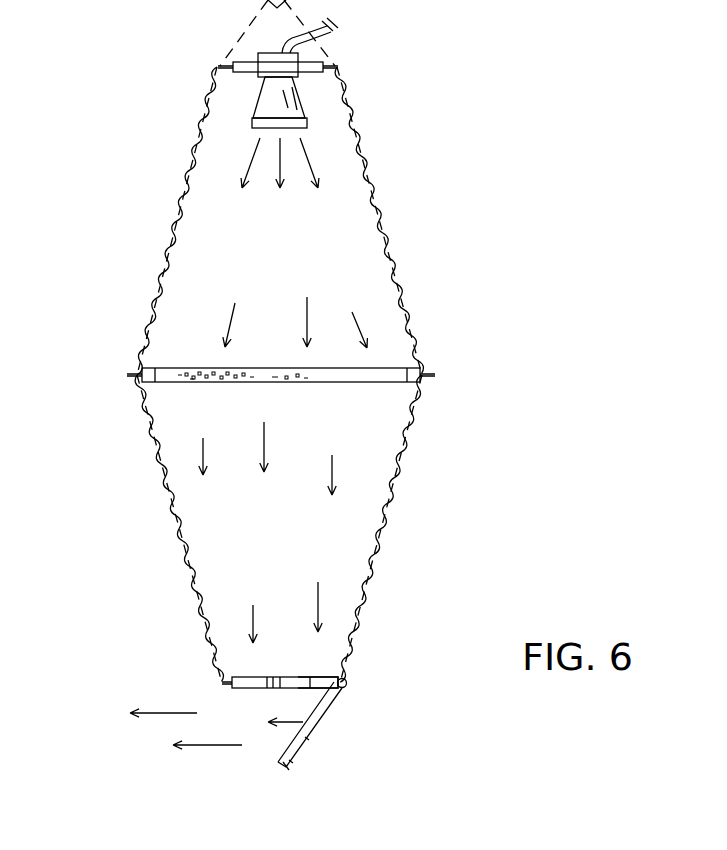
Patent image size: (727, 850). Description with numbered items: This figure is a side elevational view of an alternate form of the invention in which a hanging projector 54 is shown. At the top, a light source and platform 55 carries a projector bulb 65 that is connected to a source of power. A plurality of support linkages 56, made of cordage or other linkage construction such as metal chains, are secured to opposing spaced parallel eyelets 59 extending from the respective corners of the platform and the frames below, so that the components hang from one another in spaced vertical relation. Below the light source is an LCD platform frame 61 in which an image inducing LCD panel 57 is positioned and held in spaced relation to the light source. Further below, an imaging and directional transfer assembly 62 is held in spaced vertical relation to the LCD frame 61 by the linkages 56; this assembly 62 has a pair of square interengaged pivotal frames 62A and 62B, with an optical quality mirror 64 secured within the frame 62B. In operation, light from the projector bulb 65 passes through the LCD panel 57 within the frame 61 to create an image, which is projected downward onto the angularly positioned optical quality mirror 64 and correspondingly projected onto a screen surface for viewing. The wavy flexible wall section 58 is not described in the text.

The hanging projector 54 is at (433, 194).
The light source and platform 55 is at (315, 86).
The support linkages 56 is at (409, 269).
The LCD panel 57 is at (367, 391).
The lower flexible wall section 58 is at (375, 578).
The eyelets 59 is at (337, 65).
The LCD platform frame 61 is at (332, 378).
The imaging and directional transfer assembly 62 is at (254, 696).
The pivotal frame 62A is at (310, 677).
The pivotal frame 62B is at (332, 710).
The optical quality mirror 64 is at (297, 767).
The projector bulb 65 is at (270, 105).